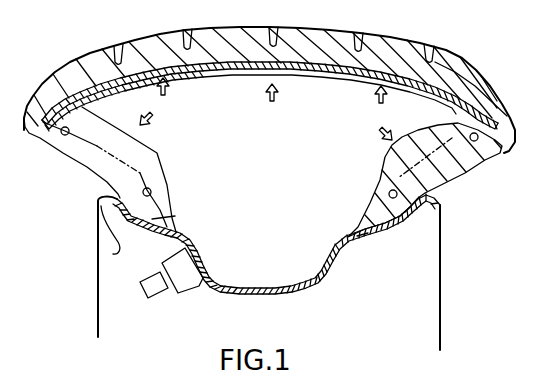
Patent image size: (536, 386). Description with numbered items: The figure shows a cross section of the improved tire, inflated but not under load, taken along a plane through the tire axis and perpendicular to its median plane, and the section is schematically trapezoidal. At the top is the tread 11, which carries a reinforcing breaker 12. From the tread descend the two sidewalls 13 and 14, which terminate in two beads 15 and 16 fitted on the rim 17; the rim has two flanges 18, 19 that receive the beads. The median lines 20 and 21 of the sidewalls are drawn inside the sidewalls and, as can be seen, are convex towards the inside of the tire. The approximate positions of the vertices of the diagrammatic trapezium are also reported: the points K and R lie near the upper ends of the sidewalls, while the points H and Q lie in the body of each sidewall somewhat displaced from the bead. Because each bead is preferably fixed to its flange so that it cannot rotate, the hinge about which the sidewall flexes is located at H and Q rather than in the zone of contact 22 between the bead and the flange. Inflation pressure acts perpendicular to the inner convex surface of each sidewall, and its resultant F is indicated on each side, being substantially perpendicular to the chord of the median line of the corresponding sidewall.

The tread 11 is at (226, 36).
The reinforcing breaker 12 is at (187, 63).
The sidewall 13 is at (145, 152).
The sidewall 14 is at (389, 161).
The bead 15 is at (158, 217).
The bead 16 is at (372, 223).
The rim 17 is at (281, 300).
The flange 18 is at (123, 253).
The flange 19 is at (441, 236).
The median line of the sidewall 20 is at (100, 153).
The median line of the sidewall 21 is at (437, 151).
The zone of contact 22 is at (375, 238).
The vertex of the trapezium K is at (54, 147).
The hinge point H is at (152, 192).
The hinge point Q is at (388, 194).
The vertex of the trapezium R is at (478, 142).
The resultant force F is at (266, 111).